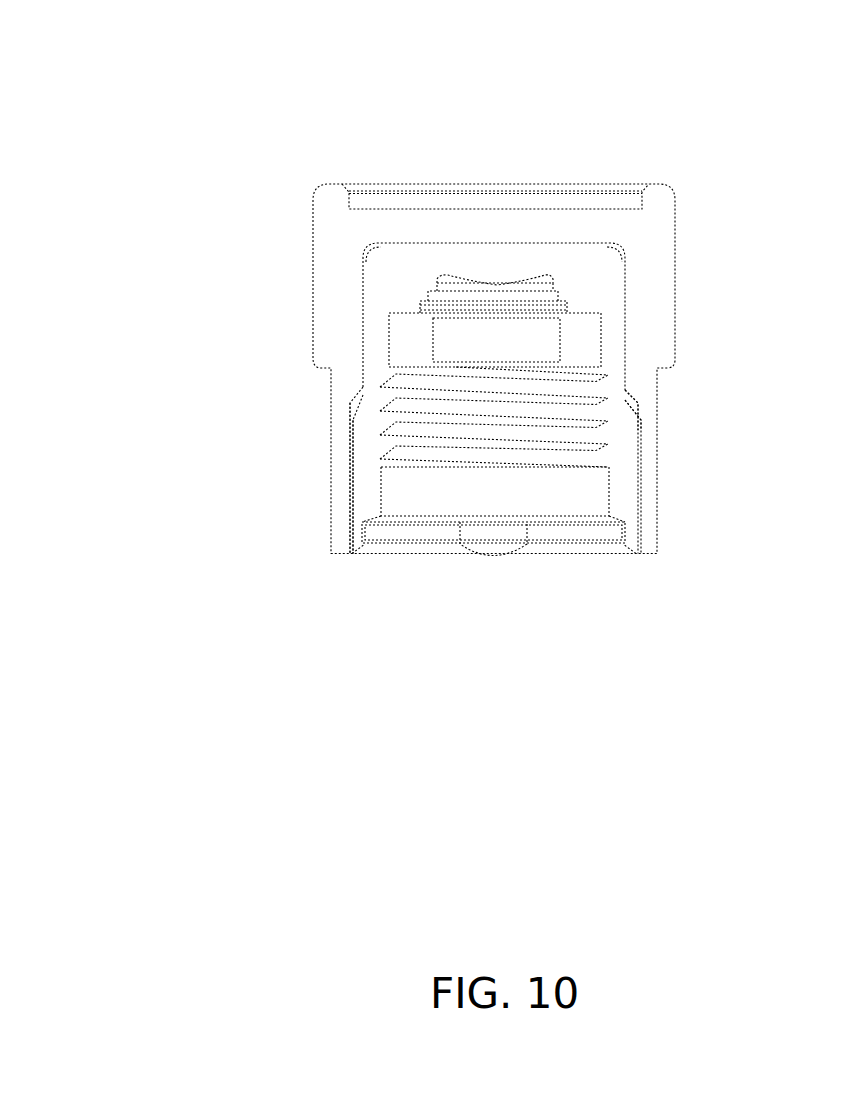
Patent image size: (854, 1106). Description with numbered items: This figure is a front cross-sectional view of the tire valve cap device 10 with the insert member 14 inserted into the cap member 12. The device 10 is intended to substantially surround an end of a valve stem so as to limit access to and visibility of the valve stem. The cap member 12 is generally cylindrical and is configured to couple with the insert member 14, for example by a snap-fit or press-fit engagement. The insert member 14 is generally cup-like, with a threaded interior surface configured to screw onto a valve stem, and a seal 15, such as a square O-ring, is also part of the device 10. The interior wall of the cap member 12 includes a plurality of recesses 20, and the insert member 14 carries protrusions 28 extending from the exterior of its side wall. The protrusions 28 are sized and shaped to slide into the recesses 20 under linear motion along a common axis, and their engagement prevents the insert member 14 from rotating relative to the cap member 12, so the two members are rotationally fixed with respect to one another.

The tire valve cap device 10 is at (147, 61).
The cap member 12 is at (315, 244).
The insert member 14 is at (618, 293).
The seal 15 is at (400, 338).
The recesses 20 is at (633, 402).
The protrusions 28 is at (363, 447).